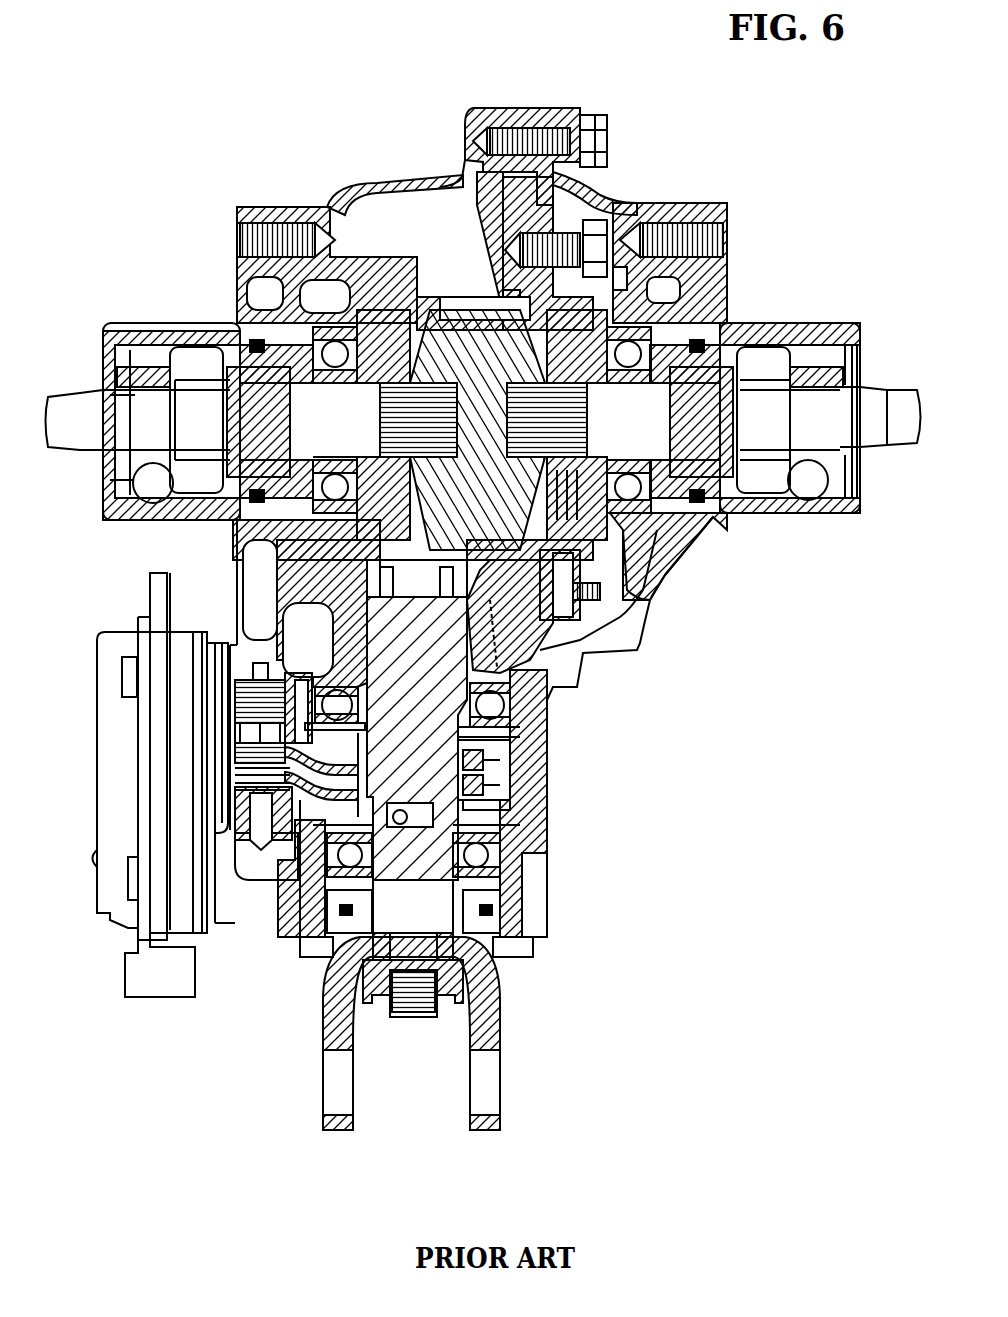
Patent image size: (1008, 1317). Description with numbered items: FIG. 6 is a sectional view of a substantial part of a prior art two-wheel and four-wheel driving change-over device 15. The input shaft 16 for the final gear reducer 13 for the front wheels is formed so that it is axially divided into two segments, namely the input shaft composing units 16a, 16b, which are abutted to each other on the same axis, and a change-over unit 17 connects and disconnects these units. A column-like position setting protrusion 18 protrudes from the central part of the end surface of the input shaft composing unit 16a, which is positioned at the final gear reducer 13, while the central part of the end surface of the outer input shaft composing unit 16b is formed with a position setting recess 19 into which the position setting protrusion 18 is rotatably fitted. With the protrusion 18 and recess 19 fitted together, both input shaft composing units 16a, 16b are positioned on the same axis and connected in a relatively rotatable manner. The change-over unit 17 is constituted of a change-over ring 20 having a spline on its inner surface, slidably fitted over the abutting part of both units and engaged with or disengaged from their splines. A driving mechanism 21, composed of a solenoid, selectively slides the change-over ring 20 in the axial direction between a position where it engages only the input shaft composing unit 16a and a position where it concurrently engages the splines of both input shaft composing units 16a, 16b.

The final gear reducer 13 is at (650, 600).
The two-wheel and four-wheel driving change-over device 15 is at (540, 890).
The input shaft 16 is at (518, 845).
The input shaft composing unit 16a is at (437, 697).
The input shaft composing unit 16b is at (480, 1010).
The change-over unit 17 is at (503, 767).
The position setting protrusion 18 is at (533, 853).
The position setting recess 19 is at (415, 868).
The change-over ring 20 is at (490, 782).
The driving mechanism 21 is at (262, 662).